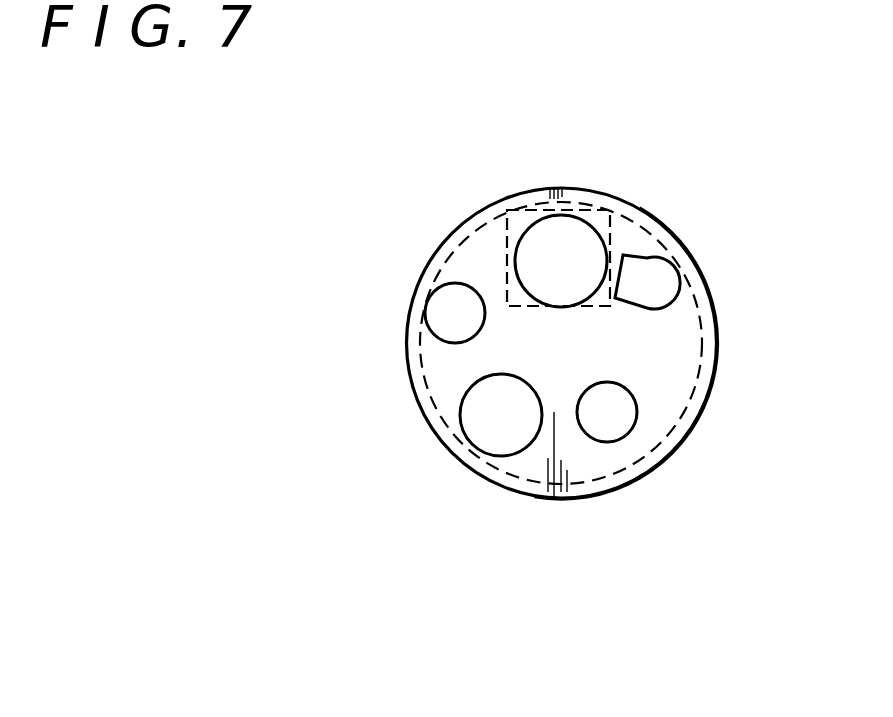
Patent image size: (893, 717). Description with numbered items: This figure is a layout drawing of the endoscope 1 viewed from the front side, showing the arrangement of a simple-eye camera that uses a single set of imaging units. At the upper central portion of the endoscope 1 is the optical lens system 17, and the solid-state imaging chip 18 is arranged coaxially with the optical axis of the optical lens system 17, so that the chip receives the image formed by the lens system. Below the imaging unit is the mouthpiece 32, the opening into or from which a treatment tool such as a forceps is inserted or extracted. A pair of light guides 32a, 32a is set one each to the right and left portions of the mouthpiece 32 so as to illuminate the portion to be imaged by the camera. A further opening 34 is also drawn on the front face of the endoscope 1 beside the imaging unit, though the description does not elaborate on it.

The endoscope 1 is at (713, 300).
The optical lens system 17 is at (550, 237).
The solid-state imaging chip 18 is at (615, 240).
The forceps channel / nozzle opening 34 is at (653, 283).
The mouthpiece 32 is at (492, 433).
The light guide 32a is at (447, 322).